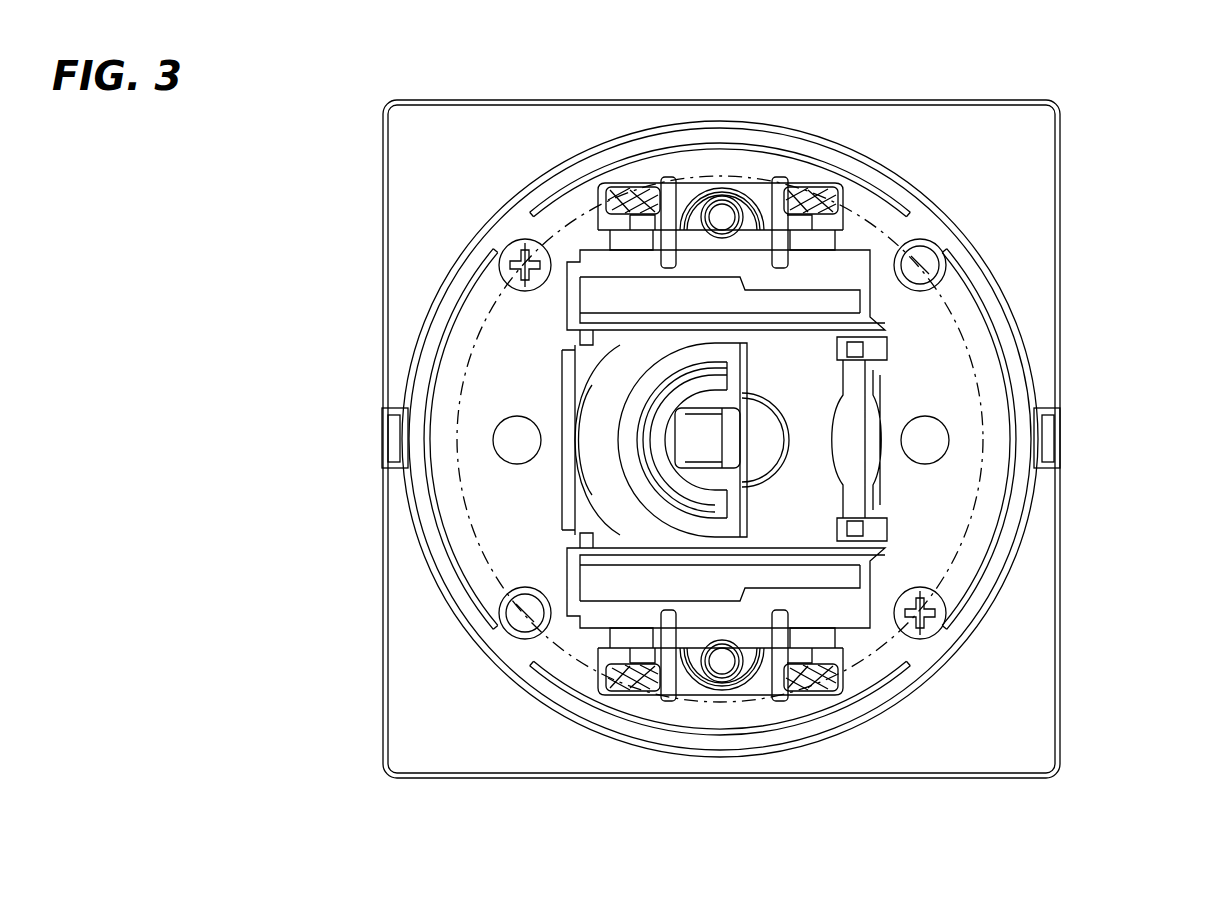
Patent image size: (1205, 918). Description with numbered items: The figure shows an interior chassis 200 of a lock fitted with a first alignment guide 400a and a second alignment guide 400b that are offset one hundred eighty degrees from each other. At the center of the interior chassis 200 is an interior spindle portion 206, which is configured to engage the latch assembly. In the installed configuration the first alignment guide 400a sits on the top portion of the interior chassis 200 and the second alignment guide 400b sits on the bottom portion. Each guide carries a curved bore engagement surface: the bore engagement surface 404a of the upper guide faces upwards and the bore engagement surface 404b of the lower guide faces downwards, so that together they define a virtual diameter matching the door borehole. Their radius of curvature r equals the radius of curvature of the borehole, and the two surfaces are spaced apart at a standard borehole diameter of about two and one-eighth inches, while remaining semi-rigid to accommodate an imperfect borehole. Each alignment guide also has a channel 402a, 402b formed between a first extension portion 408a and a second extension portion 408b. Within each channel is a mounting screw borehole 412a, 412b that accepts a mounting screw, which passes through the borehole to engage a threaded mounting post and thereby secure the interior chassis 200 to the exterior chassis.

The interior chassis 200 is at (1018, 197).
The interior spindle portion 206 is at (710, 455).
The radius of curvature r is at (982, 498).
The first alignment guide 400a is at (602, 134).
The second alignment guide 400b is at (613, 742).
The channel 402a is at (706, 232).
The channel 402b is at (705, 660).
The bore engagement surface 404a is at (740, 187).
The bore engagement surface 404b is at (750, 700).
The first extension portion 408a is at (617, 191).
The second extension portion 408b is at (760, 200).
The mounting screw borehole 412a is at (717, 213).
The mounting screw borehole 412b is at (718, 668).